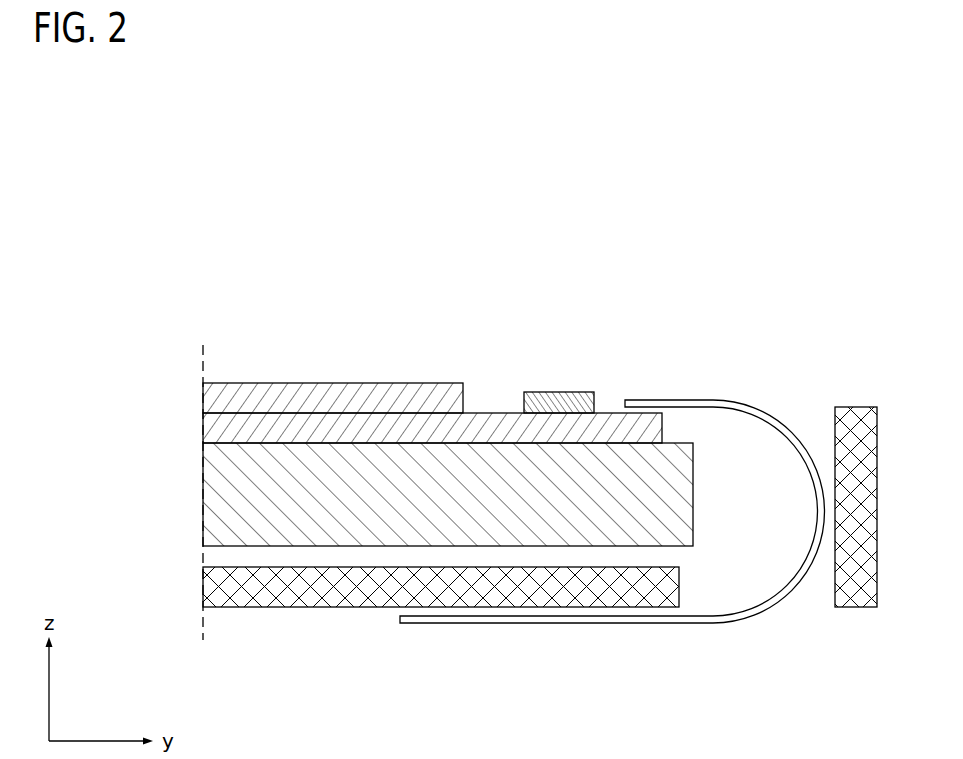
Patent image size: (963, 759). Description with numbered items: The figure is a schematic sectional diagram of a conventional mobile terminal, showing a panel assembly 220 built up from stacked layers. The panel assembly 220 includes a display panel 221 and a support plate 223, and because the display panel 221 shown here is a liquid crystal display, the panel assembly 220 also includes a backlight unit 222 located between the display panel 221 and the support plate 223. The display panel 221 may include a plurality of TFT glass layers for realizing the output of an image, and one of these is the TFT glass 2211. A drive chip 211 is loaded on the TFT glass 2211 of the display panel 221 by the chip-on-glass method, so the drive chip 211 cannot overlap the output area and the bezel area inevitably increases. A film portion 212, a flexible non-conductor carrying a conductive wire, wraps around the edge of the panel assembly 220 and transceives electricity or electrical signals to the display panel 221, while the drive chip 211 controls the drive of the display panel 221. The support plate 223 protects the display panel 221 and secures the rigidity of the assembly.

The panel assembly 220 is at (372, 458).
The display panel 221 is at (383, 377).
The TFT glass 2211 is at (412, 425).
The backlight unit 222 is at (213, 500).
The support plate 223 is at (392, 587).
The drive chip 211 is at (558, 402).
The film portion 212 is at (690, 404).